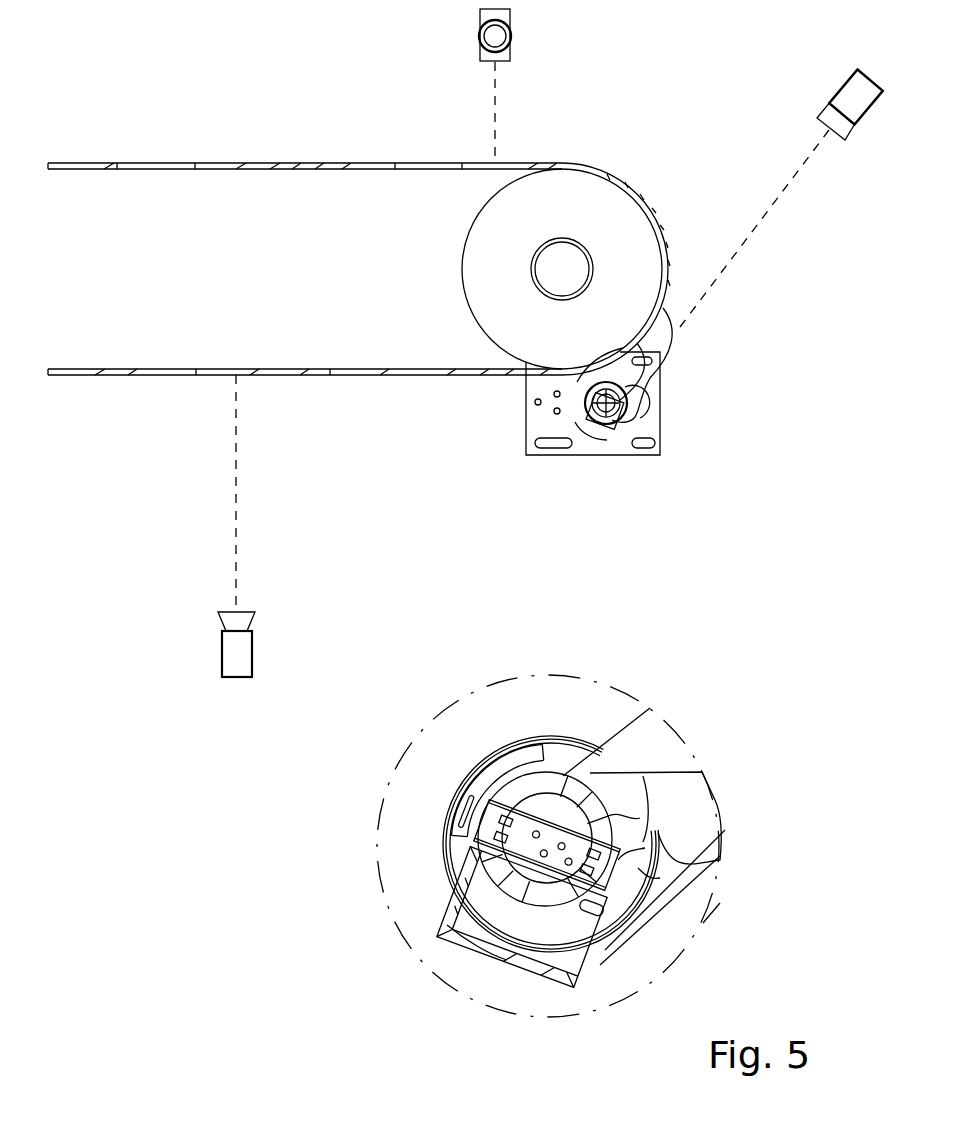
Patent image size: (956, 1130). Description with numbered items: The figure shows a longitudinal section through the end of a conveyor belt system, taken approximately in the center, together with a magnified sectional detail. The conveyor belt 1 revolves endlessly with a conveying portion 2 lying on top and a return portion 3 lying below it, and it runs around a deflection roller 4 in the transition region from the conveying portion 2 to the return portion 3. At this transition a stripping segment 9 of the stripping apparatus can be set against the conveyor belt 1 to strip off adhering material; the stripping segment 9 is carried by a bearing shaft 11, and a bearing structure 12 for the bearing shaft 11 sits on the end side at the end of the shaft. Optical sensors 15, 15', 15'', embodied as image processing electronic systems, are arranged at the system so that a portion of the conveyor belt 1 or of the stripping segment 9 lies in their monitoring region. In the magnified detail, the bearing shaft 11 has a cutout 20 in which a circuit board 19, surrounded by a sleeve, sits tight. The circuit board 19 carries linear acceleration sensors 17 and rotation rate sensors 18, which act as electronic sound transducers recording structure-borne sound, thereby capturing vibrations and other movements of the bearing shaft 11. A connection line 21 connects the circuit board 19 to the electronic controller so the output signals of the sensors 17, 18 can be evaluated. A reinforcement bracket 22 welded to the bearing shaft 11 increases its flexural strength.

The conveyor belt 1 is at (78, 118).
The conveying portion 2 is at (178, 163).
The return portion 3 is at (166, 369).
The deflection roller 4 is at (492, 215).
The stripping segment 9 is at (658, 362).
The bearing shaft 11 is at (531, 790).
The bearing structure 12 is at (583, 448).
The sensor 15 is at (530, 84).
The sensor 15' is at (194, 644).
The sensor 15'' is at (781, 190).
The linear acceleration sensor 17 is at (620, 860).
The rotation rate sensor 18 is at (610, 818).
The circuit board 19 is at (712, 893).
The cutout 20 is at (476, 833).
The connection line 21 is at (640, 870).
The reinforcement bracket 22 is at (447, 925).